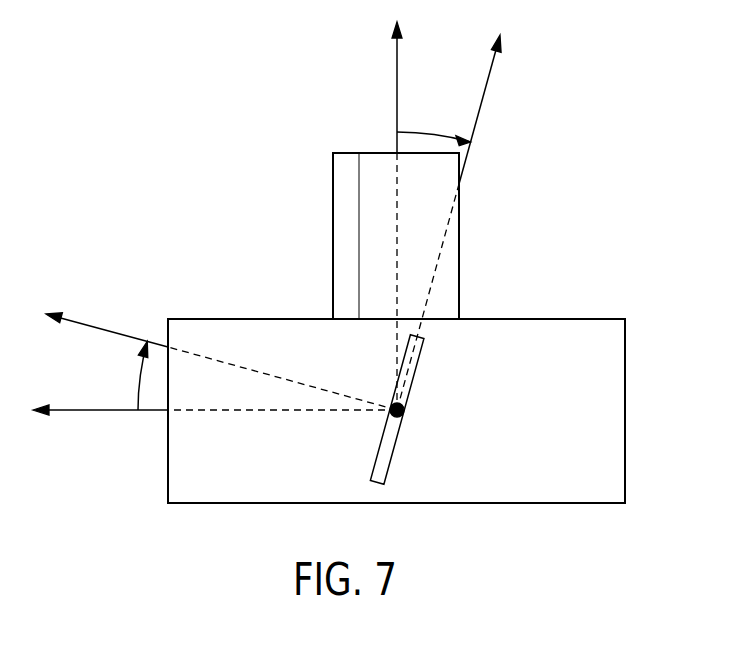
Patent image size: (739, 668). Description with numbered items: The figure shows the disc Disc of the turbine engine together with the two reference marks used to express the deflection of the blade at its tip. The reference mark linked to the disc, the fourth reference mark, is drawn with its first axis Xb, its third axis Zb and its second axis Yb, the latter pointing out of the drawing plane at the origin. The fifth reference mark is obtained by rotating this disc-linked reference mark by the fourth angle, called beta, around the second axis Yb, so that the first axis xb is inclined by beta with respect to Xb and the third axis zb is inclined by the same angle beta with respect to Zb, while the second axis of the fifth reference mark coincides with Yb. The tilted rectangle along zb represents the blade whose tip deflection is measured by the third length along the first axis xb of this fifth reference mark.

The disc Disc is at (396, 411).
The third axis of the fourth reference mark Zb is at (413, 215).
The third axis of the fifth reference mark zb is at (462, 222).
The first axis of the fifth reference mark xb is at (221, 348).
The first axis of the fourth reference mark Xb is at (215, 427).
The second axis of the fourth reference mark Yb is at (437, 420).